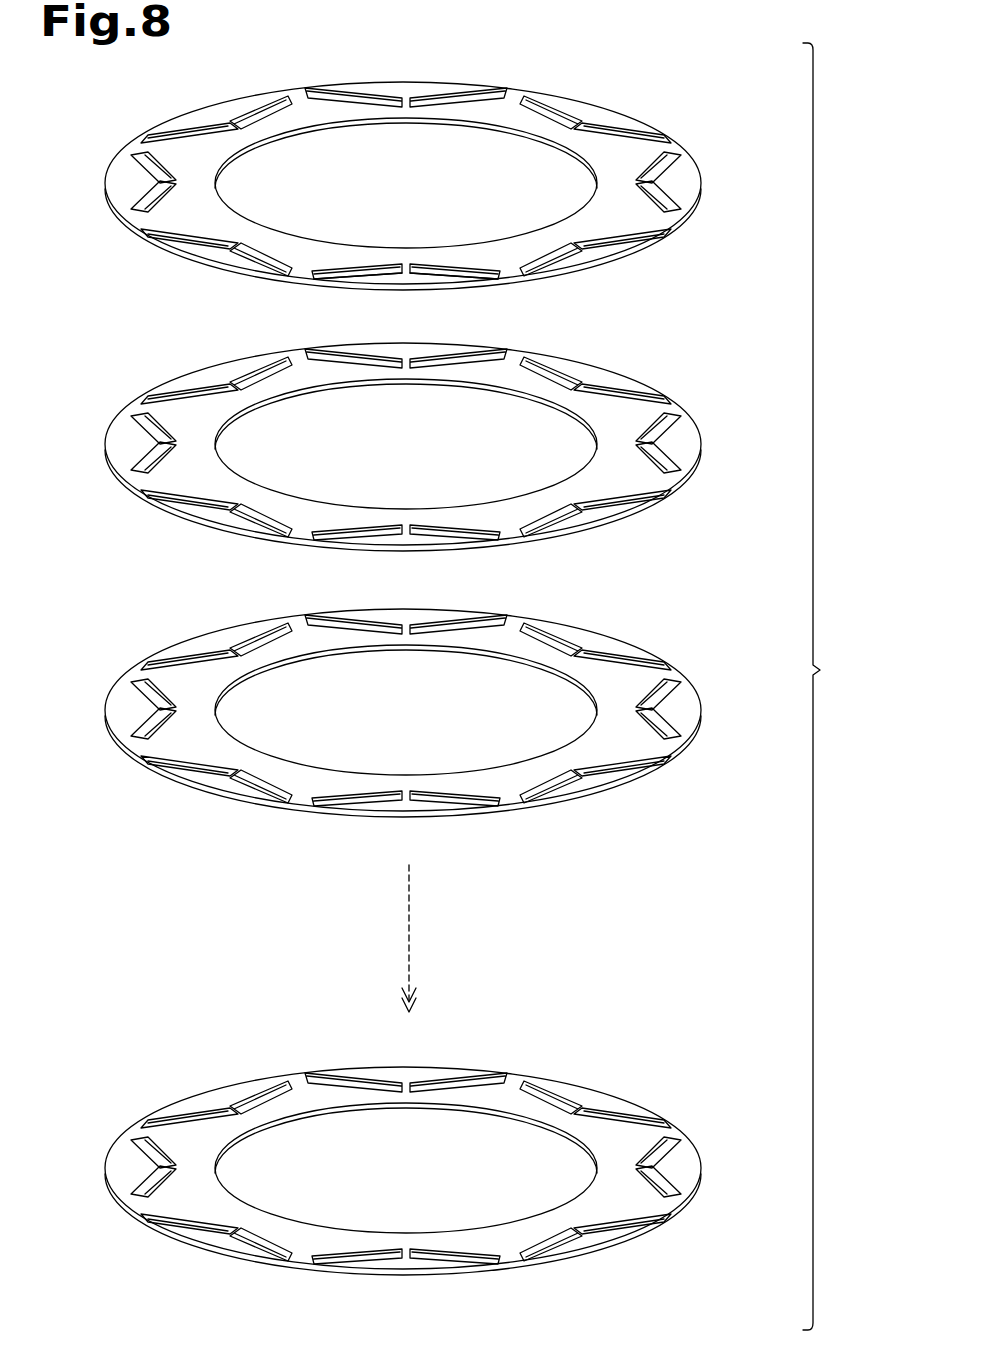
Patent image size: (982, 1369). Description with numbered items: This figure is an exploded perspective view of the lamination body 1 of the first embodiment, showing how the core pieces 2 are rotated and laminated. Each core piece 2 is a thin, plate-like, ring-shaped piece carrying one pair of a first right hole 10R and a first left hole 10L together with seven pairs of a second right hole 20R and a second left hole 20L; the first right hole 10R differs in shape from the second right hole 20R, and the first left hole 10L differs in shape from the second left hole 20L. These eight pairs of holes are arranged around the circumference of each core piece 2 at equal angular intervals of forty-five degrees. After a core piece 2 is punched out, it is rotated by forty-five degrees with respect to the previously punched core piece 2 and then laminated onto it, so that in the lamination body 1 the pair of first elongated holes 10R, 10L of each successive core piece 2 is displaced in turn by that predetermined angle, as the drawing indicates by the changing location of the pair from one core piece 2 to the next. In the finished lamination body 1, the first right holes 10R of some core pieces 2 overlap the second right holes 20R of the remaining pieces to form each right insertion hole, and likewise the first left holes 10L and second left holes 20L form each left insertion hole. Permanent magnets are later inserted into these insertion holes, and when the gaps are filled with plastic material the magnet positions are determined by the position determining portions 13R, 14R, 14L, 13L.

The lamination body 1 is at (823, 686).
The core piece 2 is at (700, 172).
The first right hole 10R is at (360, 262).
The first left hole 10L is at (448, 262).
The position determining portion 13R is at (330, 285).
The position determining portion 14R is at (378, 280).
The position determining portion 14L is at (432, 280).
The position determining portion 13L is at (492, 285).
The second right hole 20R is at (140, 157).
The second left hole 20L is at (193, 130).